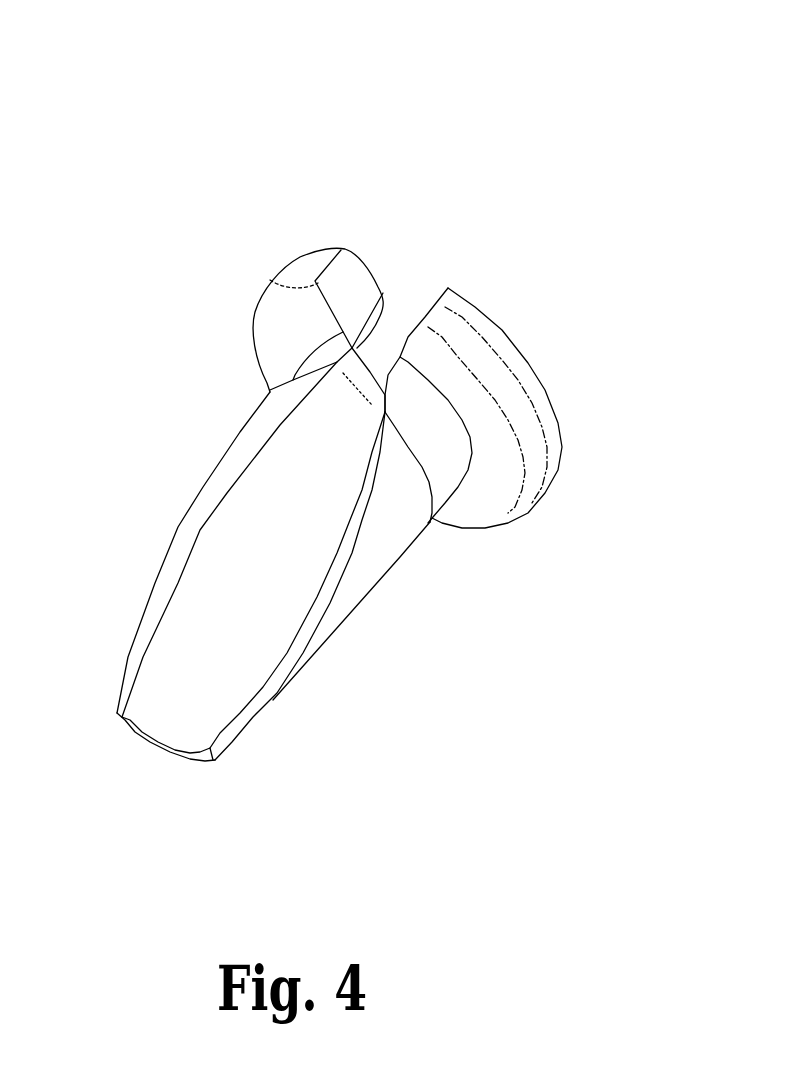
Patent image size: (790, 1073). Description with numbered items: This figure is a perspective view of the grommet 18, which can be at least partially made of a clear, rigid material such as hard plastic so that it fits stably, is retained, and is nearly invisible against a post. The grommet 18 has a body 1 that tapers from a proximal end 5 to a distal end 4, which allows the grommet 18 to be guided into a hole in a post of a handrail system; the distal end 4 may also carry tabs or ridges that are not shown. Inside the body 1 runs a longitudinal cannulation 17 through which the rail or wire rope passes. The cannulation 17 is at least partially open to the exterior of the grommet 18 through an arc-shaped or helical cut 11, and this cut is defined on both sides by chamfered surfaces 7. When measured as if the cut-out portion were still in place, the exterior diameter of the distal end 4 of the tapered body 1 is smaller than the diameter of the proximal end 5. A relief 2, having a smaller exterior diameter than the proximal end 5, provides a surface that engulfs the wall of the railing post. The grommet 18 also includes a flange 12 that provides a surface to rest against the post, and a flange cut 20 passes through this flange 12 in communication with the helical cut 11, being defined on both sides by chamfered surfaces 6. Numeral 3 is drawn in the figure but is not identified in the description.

The body 1 is at (383, 522).
The relief 2 is at (455, 440).
The clip outer wall 3 is at (493, 493).
The distal end 4 is at (173, 755).
The proximal end 5 is at (428, 520).
The chamfered surfaces 6 is at (345, 283).
The chamfered surfaces 7 is at (272, 702).
The helical cut 11 is at (232, 630).
The flange 12 is at (487, 353).
The longitudinal cannulation 17 is at (262, 500).
The grommet 18 is at (528, 188).
The flange cut 20 is at (405, 300).